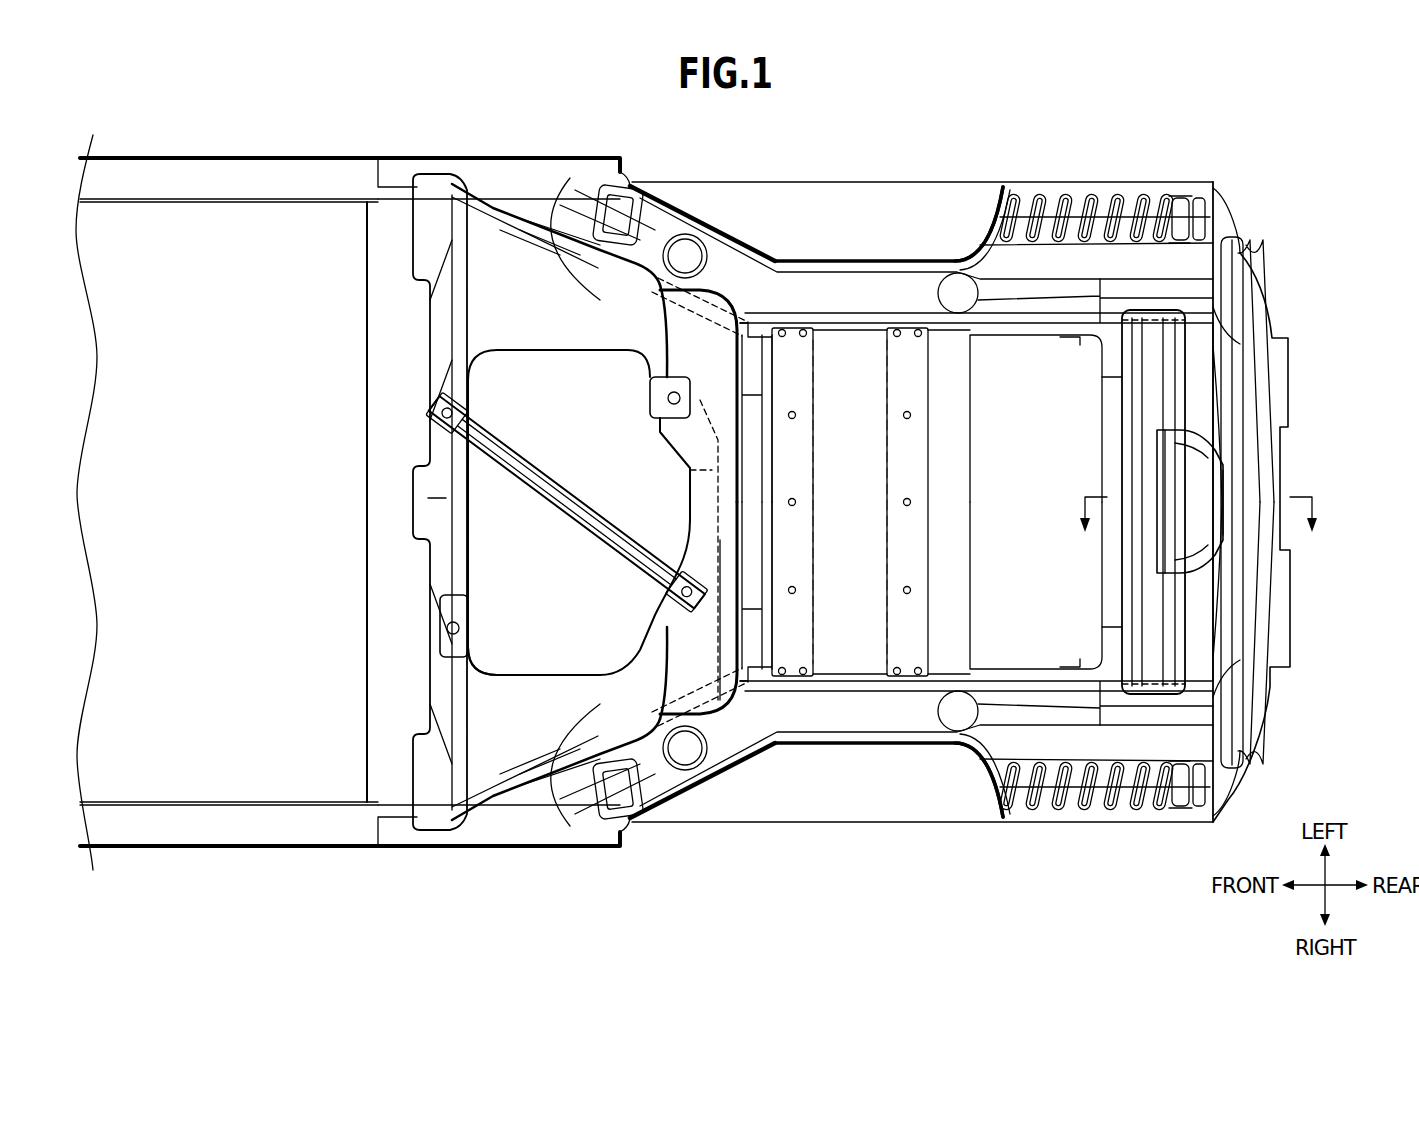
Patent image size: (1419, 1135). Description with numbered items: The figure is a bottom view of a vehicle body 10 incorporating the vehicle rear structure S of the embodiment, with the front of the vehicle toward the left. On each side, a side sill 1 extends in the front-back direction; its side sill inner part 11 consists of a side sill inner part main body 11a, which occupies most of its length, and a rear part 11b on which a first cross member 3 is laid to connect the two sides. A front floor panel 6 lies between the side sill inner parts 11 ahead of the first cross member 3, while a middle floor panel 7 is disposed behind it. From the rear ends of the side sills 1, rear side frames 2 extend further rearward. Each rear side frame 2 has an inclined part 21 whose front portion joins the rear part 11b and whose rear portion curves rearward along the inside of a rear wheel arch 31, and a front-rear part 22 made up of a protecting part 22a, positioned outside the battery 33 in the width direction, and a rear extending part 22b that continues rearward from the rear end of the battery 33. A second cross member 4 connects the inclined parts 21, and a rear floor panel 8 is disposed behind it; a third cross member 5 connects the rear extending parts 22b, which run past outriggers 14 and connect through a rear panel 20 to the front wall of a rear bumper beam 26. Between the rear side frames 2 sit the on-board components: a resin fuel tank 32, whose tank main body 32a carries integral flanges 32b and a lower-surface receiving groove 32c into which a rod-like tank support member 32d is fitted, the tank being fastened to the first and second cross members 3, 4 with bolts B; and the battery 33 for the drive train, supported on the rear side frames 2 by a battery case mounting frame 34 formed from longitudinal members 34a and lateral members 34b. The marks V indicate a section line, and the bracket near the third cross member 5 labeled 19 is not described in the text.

The vehicle rear structure S is at (1115, 105).
The side sill 1 is at (646, 500).
The side sill inner part 11 is at (646, 500).
The side sill inner part main body 11a is at (248, 500).
The rear part of the side sill inner part 11b is at (795, 500).
The rear side frame 2 is at (906, 502).
The inclined part 21 is at (655, 828).
The front-rear part 22 is at (1016, 503).
The protecting part 22a is at (893, 715).
The rear extending part 22b is at (1177, 290).
The first cross member 3 is at (445, 500).
The second cross member 4 is at (931, 439).
The third cross member 5 is at (1152, 397).
The front floor panel 6 is at (300, 233).
The middle floor panel 7 is at (560, 215).
The rear floor panel 8 is at (748, 650).
The vehicle body 10 is at (1282, 505).
The outrigger 14 is at (1147, 822).
The rear end bracket 19 is at (1200, 480).
The rear panel 20 is at (1225, 658).
The rear bumper beam 26 is at (1258, 627).
The rear wheel arch 31 is at (998, 795).
The fuel tank 32 is at (507, 502).
The tank main body 32a is at (470, 690).
The flange 32b is at (475, 665).
The receiving groove 32c is at (567, 502).
The tank support member 32d is at (608, 537).
The battery 33 is at (846, 362).
The battery case mounting frame 34 is at (937, 502).
The longitudinal member 34a is at (985, 668).
The lateral member 34b is at (795, 548).
The bolt B is at (690, 605).
The section line V is at (1198, 532).